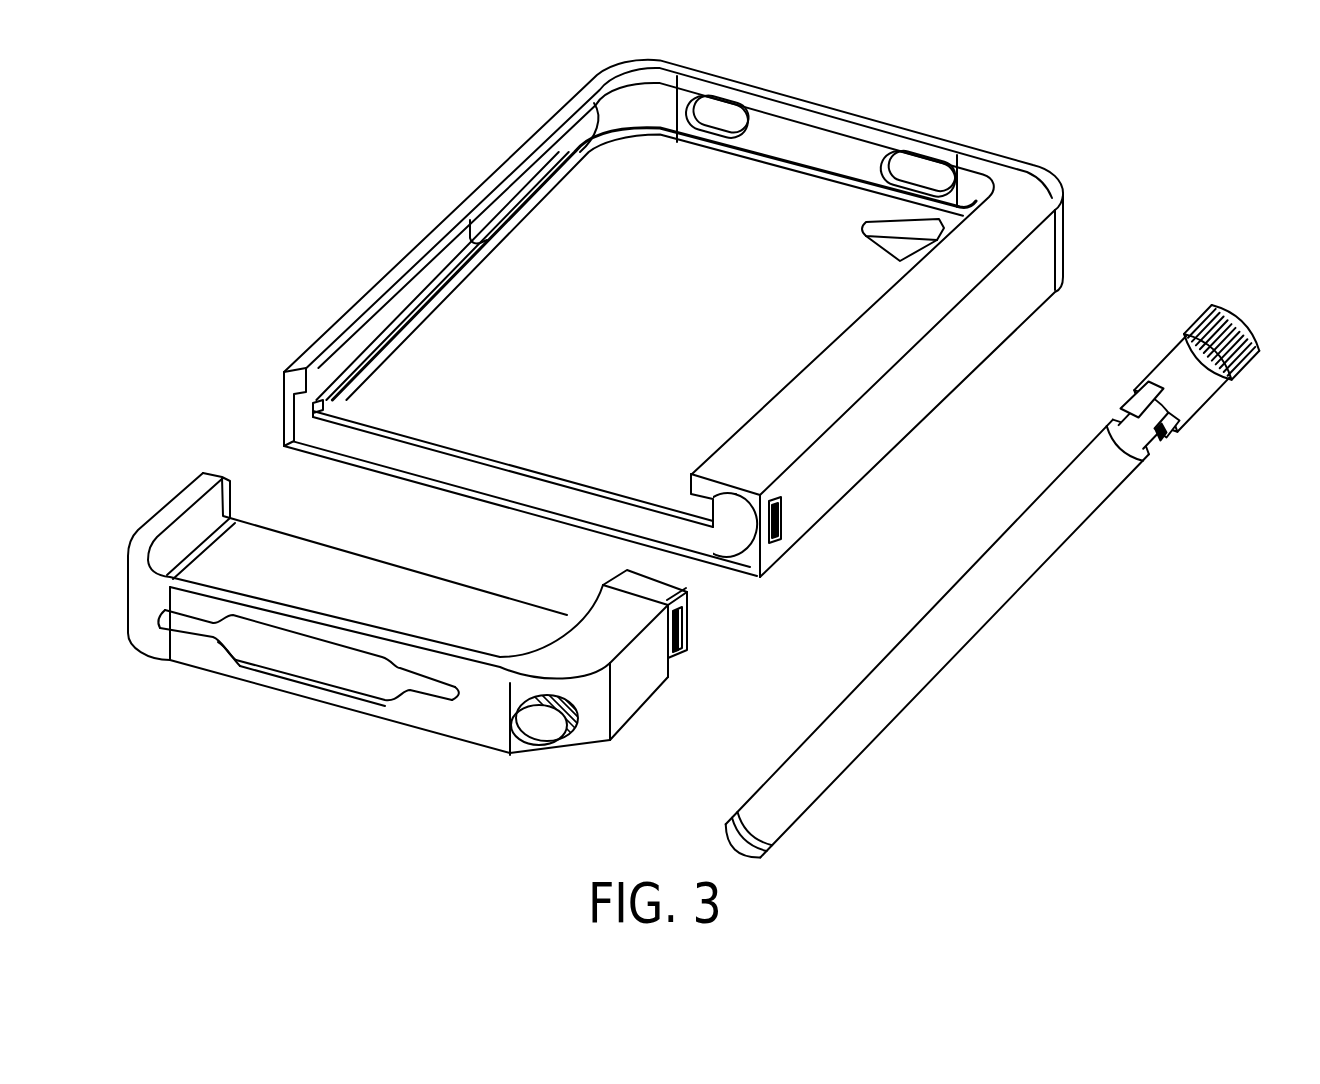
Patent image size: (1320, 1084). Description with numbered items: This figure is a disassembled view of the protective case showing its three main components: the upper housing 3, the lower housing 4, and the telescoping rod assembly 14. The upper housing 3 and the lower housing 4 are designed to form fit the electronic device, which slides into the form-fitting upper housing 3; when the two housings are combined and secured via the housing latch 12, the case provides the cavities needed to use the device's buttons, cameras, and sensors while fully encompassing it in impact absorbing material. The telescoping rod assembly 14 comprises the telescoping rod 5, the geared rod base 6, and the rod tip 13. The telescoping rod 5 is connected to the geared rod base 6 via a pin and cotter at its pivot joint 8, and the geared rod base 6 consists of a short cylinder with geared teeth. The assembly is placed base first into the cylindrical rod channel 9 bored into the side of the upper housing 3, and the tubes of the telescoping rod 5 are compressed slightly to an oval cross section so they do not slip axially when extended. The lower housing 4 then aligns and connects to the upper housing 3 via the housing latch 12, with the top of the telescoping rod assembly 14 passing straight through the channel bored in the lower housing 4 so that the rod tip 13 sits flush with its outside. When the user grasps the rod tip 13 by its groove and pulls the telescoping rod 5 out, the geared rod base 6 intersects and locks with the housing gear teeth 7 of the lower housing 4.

The upper housing 3 is at (396, 241).
The lower housing 4 is at (414, 659).
The telescoping rod 5 is at (937, 639).
The geared rod base 6 is at (1196, 368).
The housing gear teeth 7 is at (560, 723).
The pivot joint 8 is at (1149, 415).
The rod channel 9 is at (532, 728).
The housing latch 12 is at (673, 657).
The rod tip 13 is at (749, 835).
The telescoping rod assembly 14 is at (1000, 598).